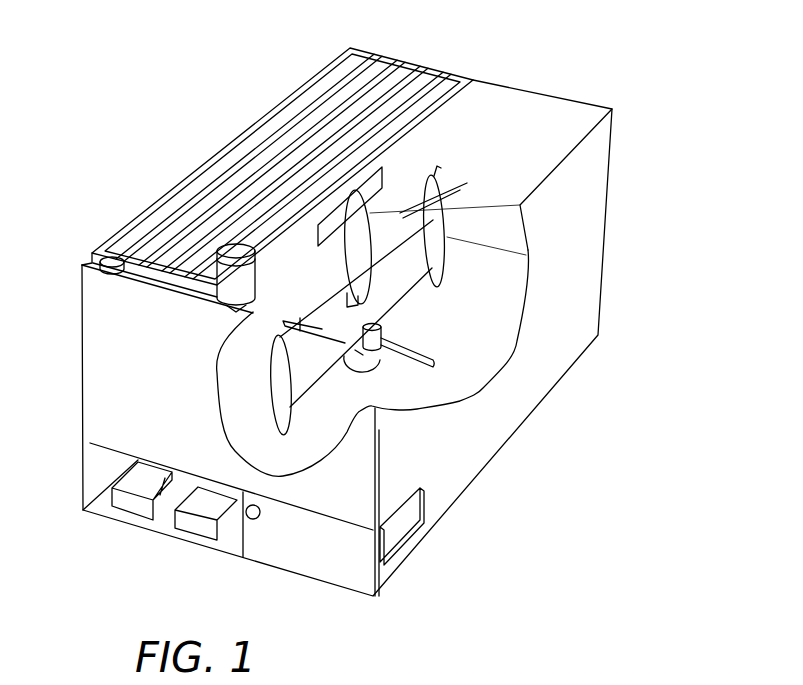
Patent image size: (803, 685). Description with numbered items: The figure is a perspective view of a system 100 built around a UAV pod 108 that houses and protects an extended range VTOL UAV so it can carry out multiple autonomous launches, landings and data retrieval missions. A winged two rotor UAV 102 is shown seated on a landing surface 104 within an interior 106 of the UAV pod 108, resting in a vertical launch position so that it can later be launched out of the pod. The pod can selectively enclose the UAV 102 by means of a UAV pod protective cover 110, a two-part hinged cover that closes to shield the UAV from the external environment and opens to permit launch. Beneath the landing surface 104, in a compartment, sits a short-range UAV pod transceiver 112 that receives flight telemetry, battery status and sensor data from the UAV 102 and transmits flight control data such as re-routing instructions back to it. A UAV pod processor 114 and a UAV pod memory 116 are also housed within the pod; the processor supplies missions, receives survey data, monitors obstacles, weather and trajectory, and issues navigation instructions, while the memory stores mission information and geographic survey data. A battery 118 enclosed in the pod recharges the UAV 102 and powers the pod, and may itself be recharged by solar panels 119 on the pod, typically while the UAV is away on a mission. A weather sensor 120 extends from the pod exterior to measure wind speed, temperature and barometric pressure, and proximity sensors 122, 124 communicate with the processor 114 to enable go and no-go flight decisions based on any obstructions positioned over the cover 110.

The system 100 is at (578, 72).
The winged two rotor UAV 102 is at (450, 226).
The landing surface 104 is at (377, 363).
The interior 106 is at (473, 337).
The UAV pod 108 is at (381, 70).
The UAV pod protective cover 110 is at (352, 176).
The UAV pod transceiver 112 is at (128, 503).
The UAV pod processor 114 is at (191, 546).
The UAV pod memory 116 is at (203, 534).
The battery 118 is at (390, 547).
The solar panels 119 is at (203, 189).
The weather sensor 120 is at (222, 283).
The proximity sensor 122 is at (110, 272).
The proximity sensor 124 is at (437, 357).